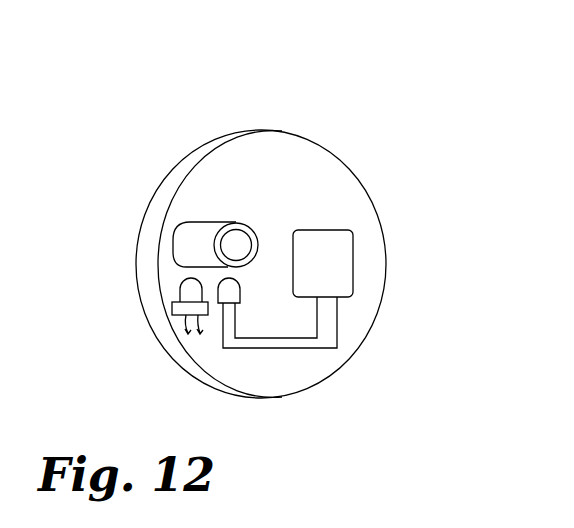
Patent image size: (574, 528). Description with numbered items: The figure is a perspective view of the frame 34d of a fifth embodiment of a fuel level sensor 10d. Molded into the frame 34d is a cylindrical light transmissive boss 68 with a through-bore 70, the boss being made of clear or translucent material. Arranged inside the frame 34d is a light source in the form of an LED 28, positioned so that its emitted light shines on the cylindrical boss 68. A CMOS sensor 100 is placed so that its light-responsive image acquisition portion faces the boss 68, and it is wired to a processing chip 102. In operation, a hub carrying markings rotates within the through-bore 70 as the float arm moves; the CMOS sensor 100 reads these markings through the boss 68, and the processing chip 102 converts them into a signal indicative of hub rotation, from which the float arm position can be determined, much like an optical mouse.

The fuel level sensor 10d is at (204, 113).
The frame 34d is at (170, 173).
The light transmissive boss 68 is at (182, 243).
The through-bore 70 is at (235, 243).
The LED 28 is at (173, 299).
The CMOS sensor 100 is at (240, 298).
The processing chip 102 is at (333, 268).